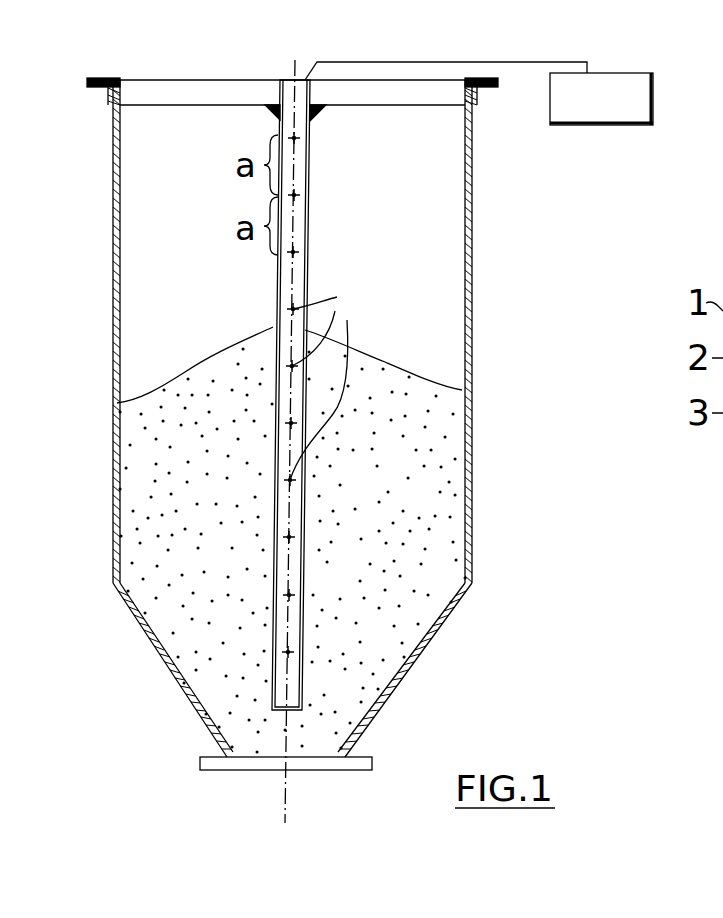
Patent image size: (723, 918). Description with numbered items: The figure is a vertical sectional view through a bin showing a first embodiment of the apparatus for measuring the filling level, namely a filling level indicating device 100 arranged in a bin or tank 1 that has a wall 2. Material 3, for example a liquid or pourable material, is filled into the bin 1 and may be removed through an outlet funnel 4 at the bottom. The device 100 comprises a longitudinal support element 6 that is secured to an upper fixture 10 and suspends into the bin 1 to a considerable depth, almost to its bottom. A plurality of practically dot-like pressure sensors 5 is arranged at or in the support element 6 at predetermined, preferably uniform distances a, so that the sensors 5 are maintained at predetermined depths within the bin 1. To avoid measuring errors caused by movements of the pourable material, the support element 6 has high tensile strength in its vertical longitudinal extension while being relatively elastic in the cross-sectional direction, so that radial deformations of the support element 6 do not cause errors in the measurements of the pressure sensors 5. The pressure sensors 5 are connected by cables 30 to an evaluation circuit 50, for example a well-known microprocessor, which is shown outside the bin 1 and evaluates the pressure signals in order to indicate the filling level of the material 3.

The bin 1 is at (478, 251).
The wall 2 is at (470, 325).
The material 3 is at (437, 422).
The outlet funnel 4 is at (400, 675).
The pressure sensors 5 is at (325, 395).
The longitudinal support element 6 is at (300, 223).
The upper fixture 10 is at (353, 95).
The cables 30 is at (522, 62).
The evaluation circuit 50 is at (630, 125).
The filling level indicating device 100 is at (268, 282).